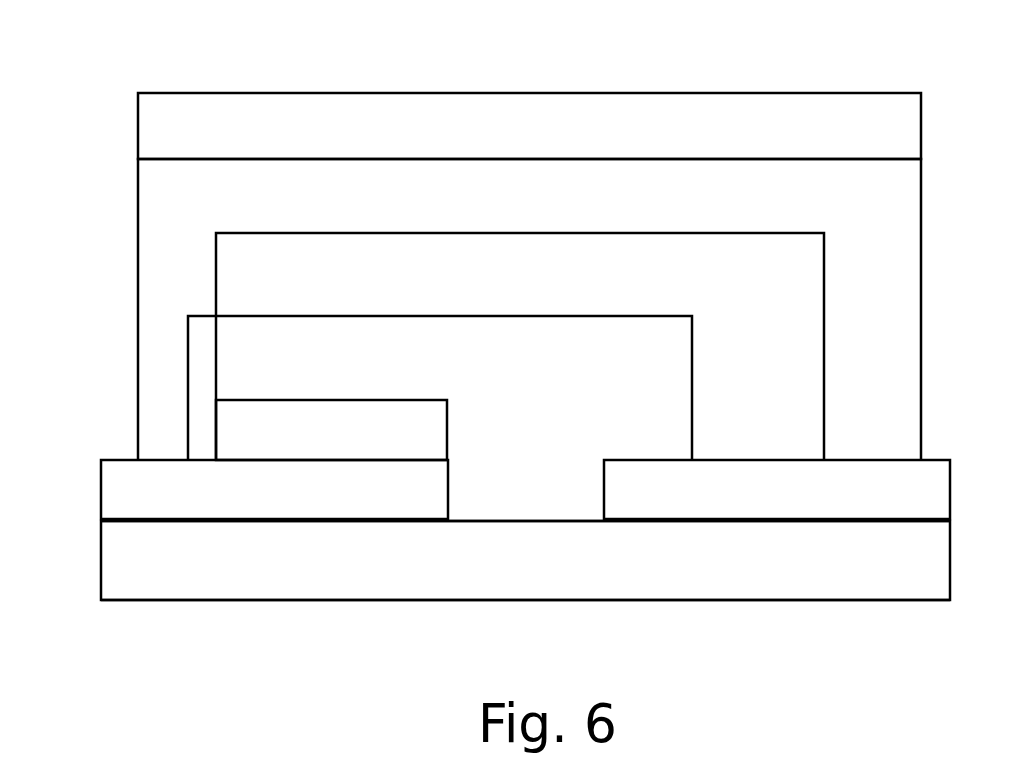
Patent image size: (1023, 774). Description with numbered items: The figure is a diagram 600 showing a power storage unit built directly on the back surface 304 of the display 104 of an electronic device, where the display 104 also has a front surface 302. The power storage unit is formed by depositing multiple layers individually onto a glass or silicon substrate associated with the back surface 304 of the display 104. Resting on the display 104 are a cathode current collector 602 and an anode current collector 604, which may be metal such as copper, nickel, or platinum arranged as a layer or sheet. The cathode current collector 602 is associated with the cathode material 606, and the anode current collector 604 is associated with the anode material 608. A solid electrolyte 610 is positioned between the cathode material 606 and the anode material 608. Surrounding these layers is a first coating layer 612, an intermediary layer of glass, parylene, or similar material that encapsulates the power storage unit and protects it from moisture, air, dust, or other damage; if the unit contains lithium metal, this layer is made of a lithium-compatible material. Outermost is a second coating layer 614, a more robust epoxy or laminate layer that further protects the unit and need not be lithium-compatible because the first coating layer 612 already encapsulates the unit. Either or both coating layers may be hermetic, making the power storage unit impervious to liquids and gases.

The diagram 600 is at (934, 40).
The second coating layer 614 is at (529, 126).
The first coating layer 612 is at (529, 309).
The anode material 608 is at (520, 346).
The solid electrolyte 610 is at (440, 388).
The cathode material 606 is at (331, 430).
The cathode current collector 602 is at (274, 489).
The anode current collector 604 is at (777, 489).
The display 104 is at (525, 560).
The front surface 302 is at (229, 607).
The back surface 304 is at (702, 532).